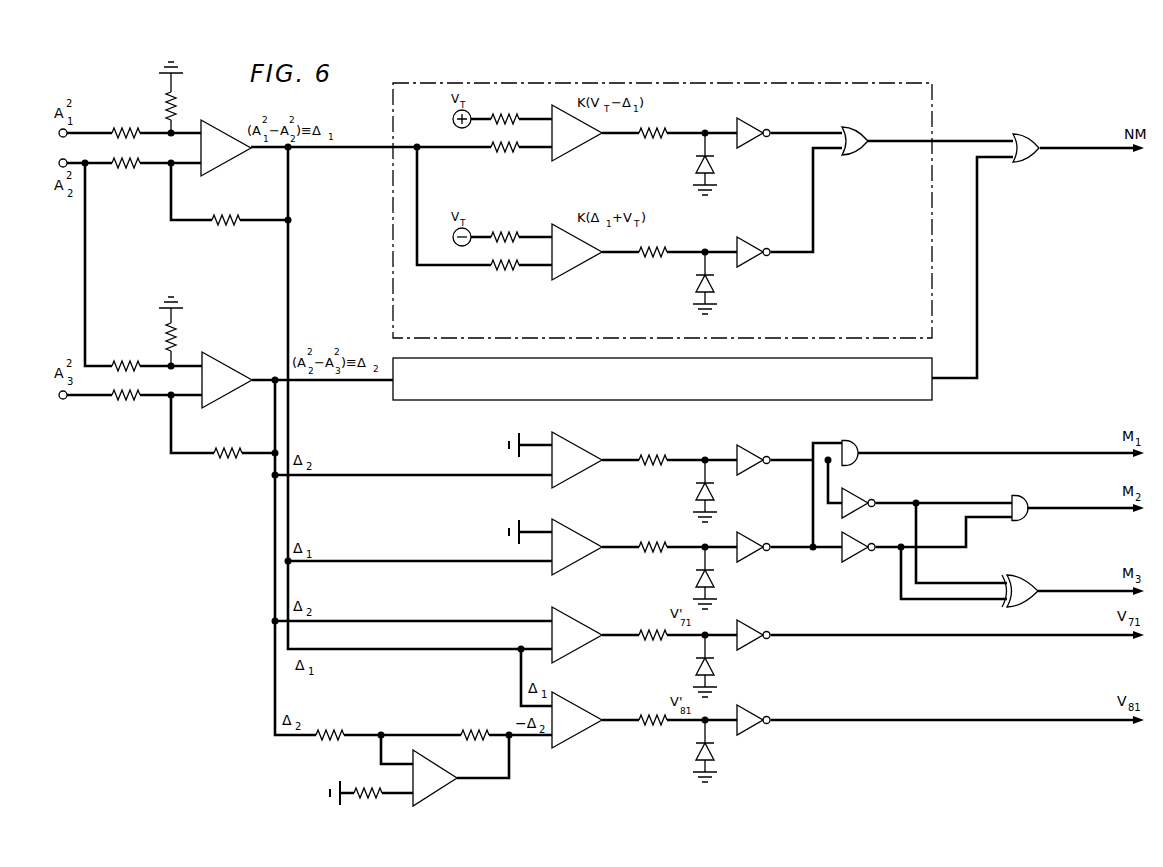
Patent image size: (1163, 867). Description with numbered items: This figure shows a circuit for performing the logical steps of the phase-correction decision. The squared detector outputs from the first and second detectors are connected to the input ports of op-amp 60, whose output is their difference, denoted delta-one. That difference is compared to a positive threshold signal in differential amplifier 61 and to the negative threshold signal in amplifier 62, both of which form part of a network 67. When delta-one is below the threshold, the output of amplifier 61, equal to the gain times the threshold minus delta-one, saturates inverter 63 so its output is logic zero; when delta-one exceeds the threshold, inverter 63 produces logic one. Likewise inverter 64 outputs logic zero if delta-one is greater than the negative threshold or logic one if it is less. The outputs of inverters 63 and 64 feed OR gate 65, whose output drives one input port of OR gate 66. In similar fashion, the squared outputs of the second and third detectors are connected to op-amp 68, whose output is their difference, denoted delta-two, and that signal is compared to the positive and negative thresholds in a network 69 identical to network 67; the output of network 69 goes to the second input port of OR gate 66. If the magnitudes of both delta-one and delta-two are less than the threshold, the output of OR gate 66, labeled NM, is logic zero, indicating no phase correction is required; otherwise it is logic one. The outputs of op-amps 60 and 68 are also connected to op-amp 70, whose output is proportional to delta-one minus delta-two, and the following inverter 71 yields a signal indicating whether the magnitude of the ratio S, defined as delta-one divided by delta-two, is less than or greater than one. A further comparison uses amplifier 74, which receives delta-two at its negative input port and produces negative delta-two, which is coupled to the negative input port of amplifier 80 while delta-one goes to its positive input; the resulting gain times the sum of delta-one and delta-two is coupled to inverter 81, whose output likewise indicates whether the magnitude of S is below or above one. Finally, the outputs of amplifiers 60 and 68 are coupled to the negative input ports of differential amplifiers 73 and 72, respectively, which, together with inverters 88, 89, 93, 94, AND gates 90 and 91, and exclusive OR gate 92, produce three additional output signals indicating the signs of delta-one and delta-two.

The op-amp 60 is at (228, 154).
The differential amplifier 61 is at (578, 140).
The amplifier 62 is at (578, 258).
The inverter 63 is at (748, 121).
The inverter 64 is at (748, 240).
The OR gate 65 is at (852, 130).
The OR gate 66 is at (1024, 136).
The network 67 is at (932, 114).
The op-amp 68 is at (228, 386).
The network 69 is at (932, 368).
The op-amp 70 is at (572, 628).
The inverter 71 is at (748, 623).
The differential amplifier 72 is at (572, 453).
The differential amplifier 73 is at (572, 540).
The amplifier 74 is at (430, 770).
The amplifier 80 is at (572, 713).
The inverter 81 is at (756, 700).
The inverter 88 is at (748, 448).
The inverter 89 is at (756, 527).
The AND gate 90 is at (852, 442).
The AND gate 91 is at (1032, 489).
The exclusive OR gate 92 is at (1022, 582).
The inverter 93 is at (861, 483).
The inverter 94 is at (861, 527).